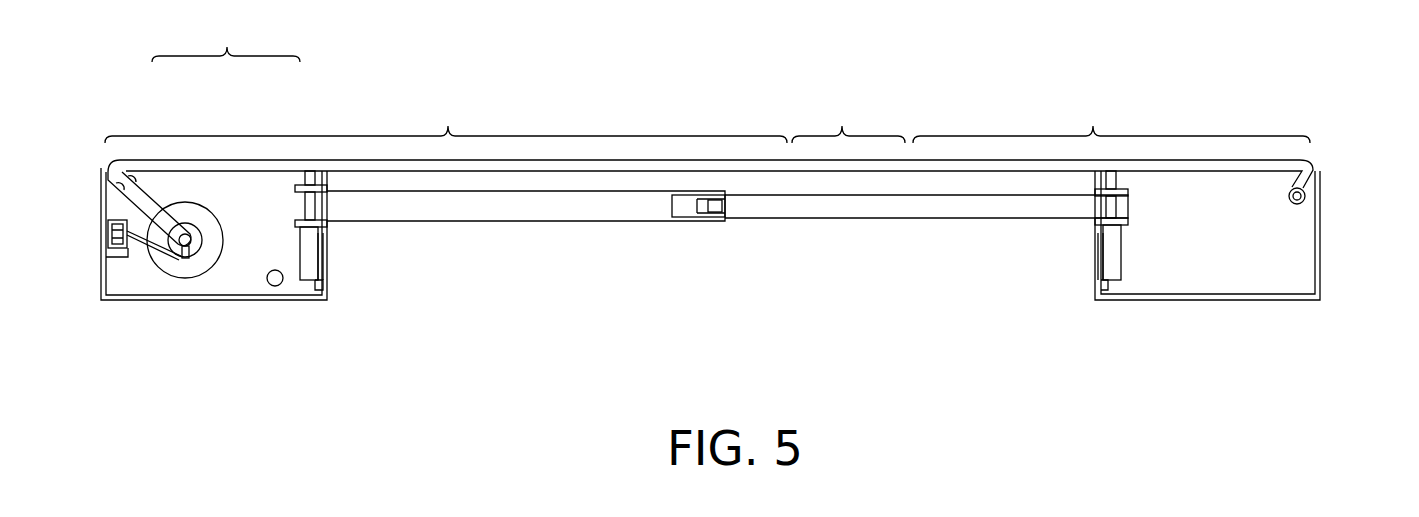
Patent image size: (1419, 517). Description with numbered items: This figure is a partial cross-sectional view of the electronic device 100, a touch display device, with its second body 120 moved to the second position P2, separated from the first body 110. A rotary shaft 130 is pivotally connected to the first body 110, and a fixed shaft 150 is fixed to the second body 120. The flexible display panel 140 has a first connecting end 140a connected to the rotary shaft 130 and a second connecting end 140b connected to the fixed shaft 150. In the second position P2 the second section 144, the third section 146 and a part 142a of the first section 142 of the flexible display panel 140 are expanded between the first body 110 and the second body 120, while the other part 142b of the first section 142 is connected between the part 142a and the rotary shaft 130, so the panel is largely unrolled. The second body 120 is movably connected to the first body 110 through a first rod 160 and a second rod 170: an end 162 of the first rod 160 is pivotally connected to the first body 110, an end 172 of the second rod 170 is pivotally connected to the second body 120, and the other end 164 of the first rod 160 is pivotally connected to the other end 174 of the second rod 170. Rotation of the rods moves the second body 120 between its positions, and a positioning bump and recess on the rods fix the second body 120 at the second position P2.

The electronic device 100 is at (1378, 425).
The first body 110 is at (121, 278).
The second body 120 is at (1287, 265).
The rotary shaft 130 is at (201, 252).
The flexible display panel 140 is at (978, 163).
The first connecting end 140a is at (205, 236).
The second connecting end 140b is at (1283, 203).
The first section 142 is at (226, 37).
The part of the first section 142a is at (448, 134).
The other part of the first section 142b is at (174, 160).
The second section 144 is at (1111, 114).
The third section 146 is at (848, 111).
The fixed shaft 150 is at (1306, 197).
The first rod 160 is at (493, 216).
The end of the first rod 162 is at (331, 237).
The other end of the first rod 164 is at (684, 233).
The second rod 170 is at (942, 207).
The end of the second rod 172 is at (1085, 222).
The other end of the second rod 174 is at (740, 229).
The second position P2 is at (1136, 327).